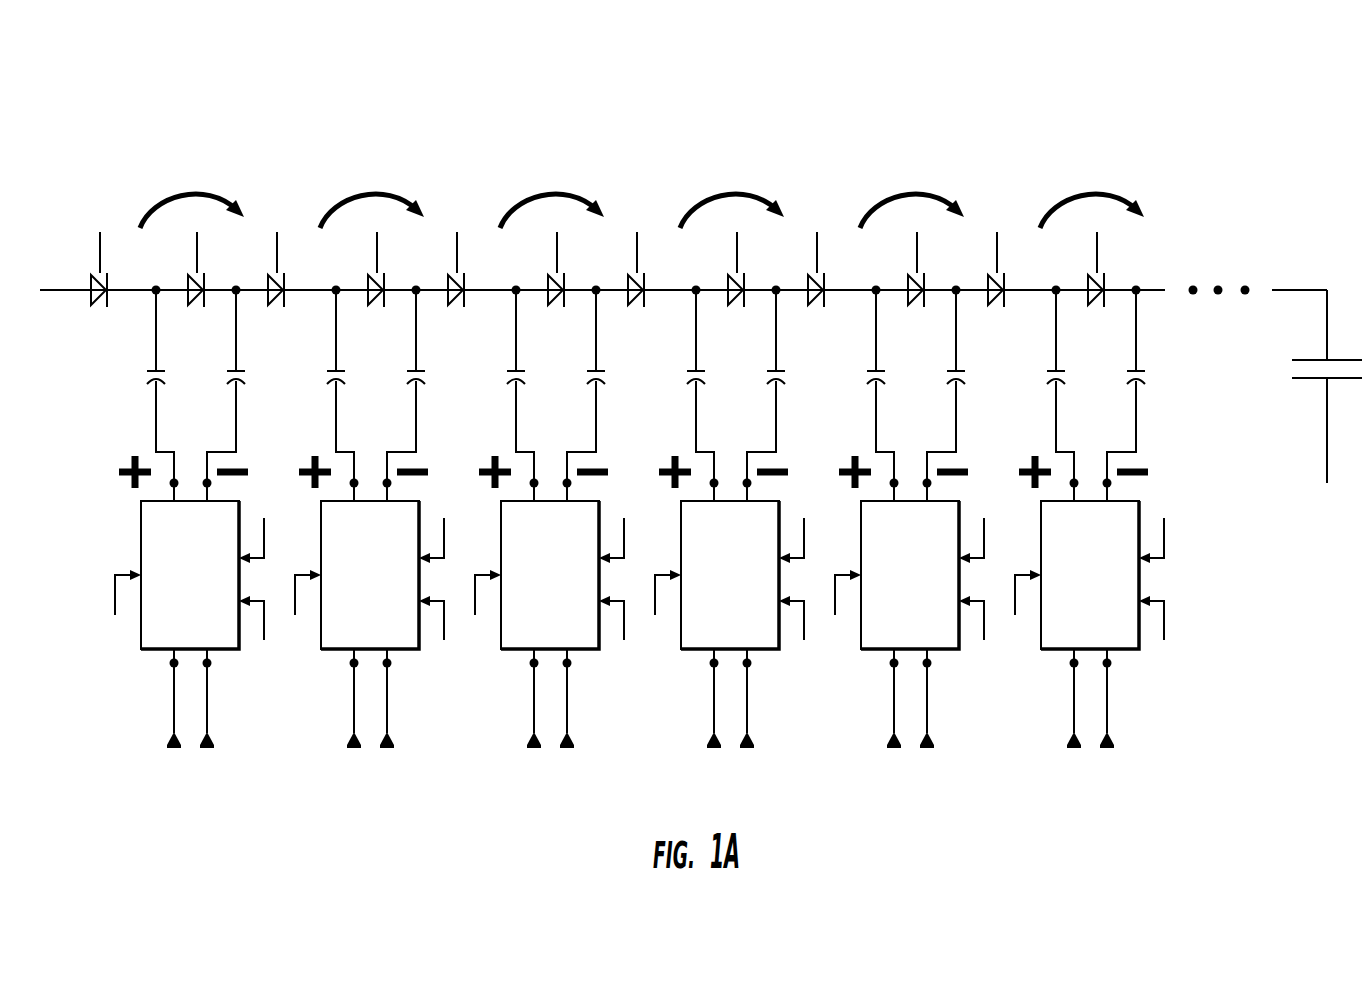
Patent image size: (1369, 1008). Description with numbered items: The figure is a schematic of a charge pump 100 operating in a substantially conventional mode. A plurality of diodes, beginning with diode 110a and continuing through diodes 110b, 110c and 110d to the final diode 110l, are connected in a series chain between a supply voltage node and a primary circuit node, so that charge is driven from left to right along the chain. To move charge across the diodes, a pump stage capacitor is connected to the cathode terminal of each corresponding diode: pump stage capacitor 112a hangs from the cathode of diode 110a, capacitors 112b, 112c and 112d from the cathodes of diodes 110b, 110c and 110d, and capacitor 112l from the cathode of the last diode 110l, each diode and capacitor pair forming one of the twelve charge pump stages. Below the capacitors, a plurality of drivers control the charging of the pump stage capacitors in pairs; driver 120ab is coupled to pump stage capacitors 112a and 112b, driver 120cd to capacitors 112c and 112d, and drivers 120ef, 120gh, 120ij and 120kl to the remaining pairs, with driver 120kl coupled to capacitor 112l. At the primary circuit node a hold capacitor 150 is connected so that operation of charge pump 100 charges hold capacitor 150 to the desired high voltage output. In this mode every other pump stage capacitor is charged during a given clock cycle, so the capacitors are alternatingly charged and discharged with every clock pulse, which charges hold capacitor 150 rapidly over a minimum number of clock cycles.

The charge pump 100 is at (180, 100).
The diode 110a is at (91, 277).
The diode 110b is at (207, 277).
The diode 110c is at (286, 277).
The diode 110d is at (386, 277).
The diode 110l is at (1106, 277).
The pump stage capacitor 112a is at (157, 370).
The pump stage capacitor 112b is at (240, 368).
The pump stage capacitor 112c is at (337, 368).
The pump stage capacitor 112d is at (418, 368).
The pump stage capacitor 112l is at (1138, 368).
The driver 120ab is at (141, 632).
The driver 120cd is at (321, 632).
The driver 120ef is at (501, 632).
The driver 120gh is at (681, 632).
The driver 120ij is at (861, 632).
The driver 120kl is at (1041, 632).
The hold capacitor 150 is at (1300, 404).